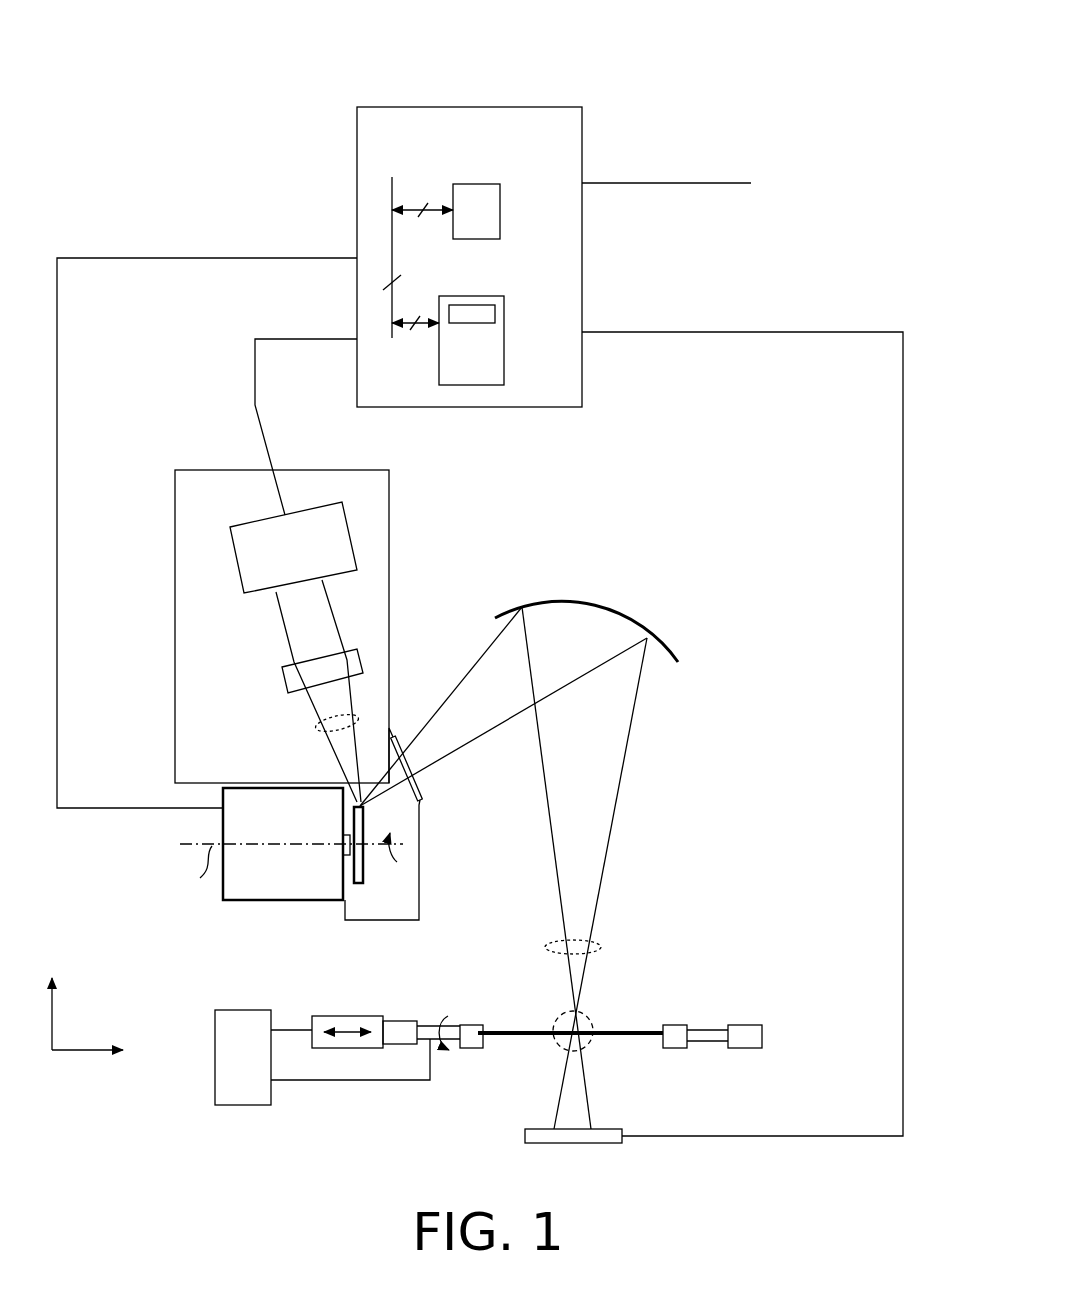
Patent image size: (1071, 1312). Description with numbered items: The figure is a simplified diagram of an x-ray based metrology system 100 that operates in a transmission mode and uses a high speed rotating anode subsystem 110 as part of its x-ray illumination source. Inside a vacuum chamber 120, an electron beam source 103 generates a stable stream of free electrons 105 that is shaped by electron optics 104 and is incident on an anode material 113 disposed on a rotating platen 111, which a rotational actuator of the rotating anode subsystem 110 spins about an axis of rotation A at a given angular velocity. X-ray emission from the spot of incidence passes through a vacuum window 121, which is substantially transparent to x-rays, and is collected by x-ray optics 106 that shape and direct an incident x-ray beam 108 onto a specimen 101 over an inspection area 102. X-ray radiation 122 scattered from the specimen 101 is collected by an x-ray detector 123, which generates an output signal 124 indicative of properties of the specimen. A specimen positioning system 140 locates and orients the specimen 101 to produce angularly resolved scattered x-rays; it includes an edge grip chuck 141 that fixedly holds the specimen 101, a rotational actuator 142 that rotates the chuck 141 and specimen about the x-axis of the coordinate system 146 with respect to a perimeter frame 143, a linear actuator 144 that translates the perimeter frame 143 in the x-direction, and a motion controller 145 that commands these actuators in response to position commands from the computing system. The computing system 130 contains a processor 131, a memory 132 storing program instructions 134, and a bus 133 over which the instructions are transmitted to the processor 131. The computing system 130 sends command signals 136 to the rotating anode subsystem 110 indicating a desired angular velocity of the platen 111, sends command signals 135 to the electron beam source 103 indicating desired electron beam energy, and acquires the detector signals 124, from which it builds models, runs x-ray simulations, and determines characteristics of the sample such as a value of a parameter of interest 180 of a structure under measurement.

The x-ray based metrology system 100 is at (888, 100).
The specimen 101 is at (532, 1029).
The inspection area 102 is at (595, 1028).
The electron beam source 103 is at (278, 556).
The electron optics 104 is at (282, 681).
The stream of free electrons 105 is at (313, 727).
The x-ray optics 106 is at (622, 614).
The incident x-ray beam 108 is at (602, 947).
The rotating anode subsystem 110 is at (263, 831).
The rotating platen 111 is at (364, 868).
The anode material 113 is at (357, 884).
The vacuum chamber 120 is at (175, 606).
The vacuum window 121 is at (425, 788).
The scattered x-ray radiation 122 is at (587, 1093).
The x-ray detector 123 is at (525, 1137).
The output signal 124 is at (677, 321).
The computing system 130 is at (456, 138).
The processor 131 is at (500, 210).
The memory 132 is at (439, 370).
The bus 133 is at (392, 252).
The program instructions 134 is at (495, 314).
The command signals 135 is at (330, 329).
The command signals 136 is at (330, 248).
The specimen positioning system 140 is at (775, 1107).
The edge grip chuck 141 is at (465, 1024).
The rotational actuator 142 is at (430, 1024).
The perimeter frame 143 is at (397, 1021).
The linear actuator 144 is at (340, 1016).
The motion controller 145 is at (228, 1067).
The coordinate system 146 is at (52, 1022).
The parameter of interest 180 is at (677, 173).